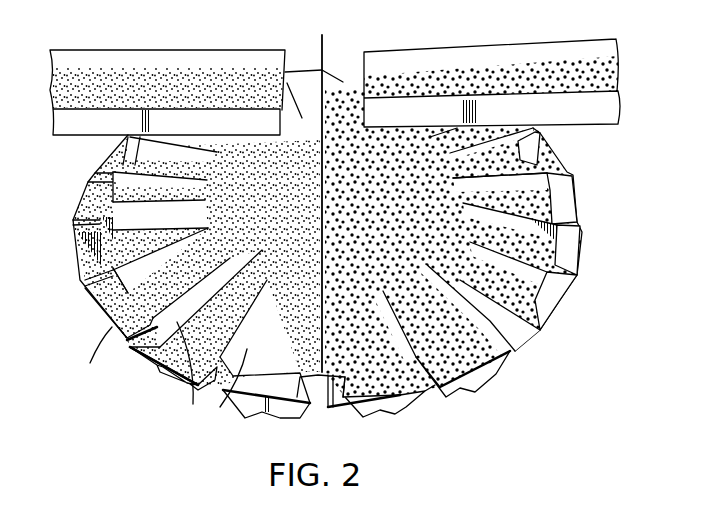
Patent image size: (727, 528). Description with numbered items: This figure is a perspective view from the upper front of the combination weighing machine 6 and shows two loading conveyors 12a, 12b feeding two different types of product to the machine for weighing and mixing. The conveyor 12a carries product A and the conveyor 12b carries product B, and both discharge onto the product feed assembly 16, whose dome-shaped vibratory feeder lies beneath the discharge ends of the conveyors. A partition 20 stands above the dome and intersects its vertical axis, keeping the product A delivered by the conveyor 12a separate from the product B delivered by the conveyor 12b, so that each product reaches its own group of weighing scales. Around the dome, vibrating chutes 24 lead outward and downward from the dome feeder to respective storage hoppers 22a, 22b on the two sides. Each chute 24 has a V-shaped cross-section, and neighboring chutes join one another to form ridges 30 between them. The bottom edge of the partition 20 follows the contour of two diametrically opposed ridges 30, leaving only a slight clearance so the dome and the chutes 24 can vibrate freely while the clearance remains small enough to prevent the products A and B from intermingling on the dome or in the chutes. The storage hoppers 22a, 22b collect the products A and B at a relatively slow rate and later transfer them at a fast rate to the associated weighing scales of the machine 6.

The combination weighing machine 6 is at (322, 270).
The loading conveyor 12a is at (167, 81).
The loading conveyor 12b is at (492, 72).
The product feed assembly 16 is at (545, 181).
The partition 20 is at (325, 67).
The storage hopper 22a is at (160, 367).
The storage hopper 22b is at (470, 381).
The vibrating chute 24 is at (233, 391).
The ridge 30 is at (328, 410).
The product A is at (97, 83).
The product B is at (543, 77).